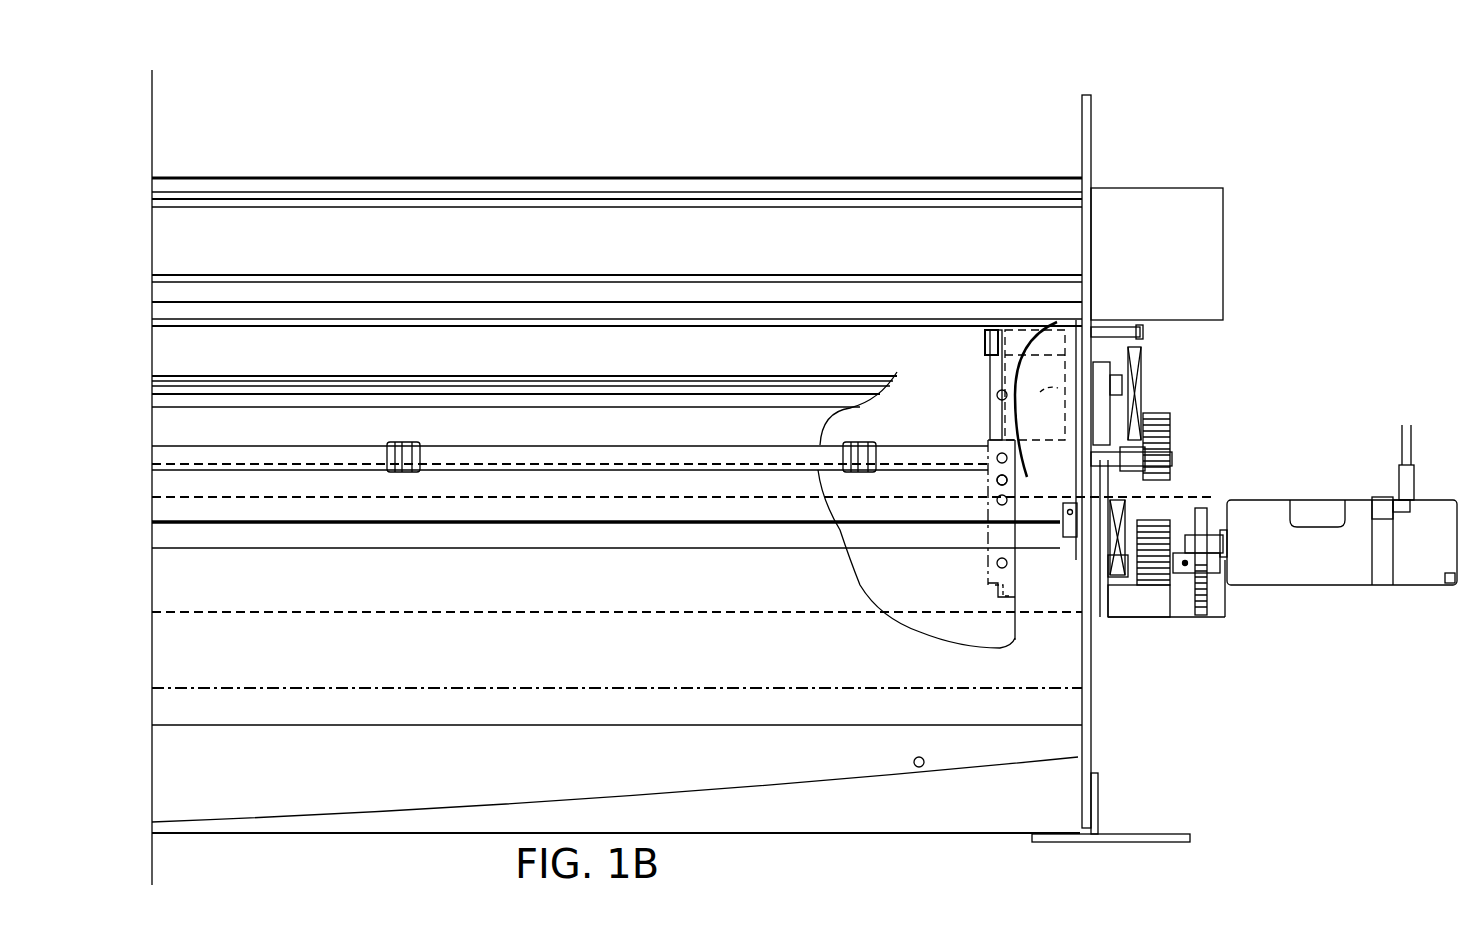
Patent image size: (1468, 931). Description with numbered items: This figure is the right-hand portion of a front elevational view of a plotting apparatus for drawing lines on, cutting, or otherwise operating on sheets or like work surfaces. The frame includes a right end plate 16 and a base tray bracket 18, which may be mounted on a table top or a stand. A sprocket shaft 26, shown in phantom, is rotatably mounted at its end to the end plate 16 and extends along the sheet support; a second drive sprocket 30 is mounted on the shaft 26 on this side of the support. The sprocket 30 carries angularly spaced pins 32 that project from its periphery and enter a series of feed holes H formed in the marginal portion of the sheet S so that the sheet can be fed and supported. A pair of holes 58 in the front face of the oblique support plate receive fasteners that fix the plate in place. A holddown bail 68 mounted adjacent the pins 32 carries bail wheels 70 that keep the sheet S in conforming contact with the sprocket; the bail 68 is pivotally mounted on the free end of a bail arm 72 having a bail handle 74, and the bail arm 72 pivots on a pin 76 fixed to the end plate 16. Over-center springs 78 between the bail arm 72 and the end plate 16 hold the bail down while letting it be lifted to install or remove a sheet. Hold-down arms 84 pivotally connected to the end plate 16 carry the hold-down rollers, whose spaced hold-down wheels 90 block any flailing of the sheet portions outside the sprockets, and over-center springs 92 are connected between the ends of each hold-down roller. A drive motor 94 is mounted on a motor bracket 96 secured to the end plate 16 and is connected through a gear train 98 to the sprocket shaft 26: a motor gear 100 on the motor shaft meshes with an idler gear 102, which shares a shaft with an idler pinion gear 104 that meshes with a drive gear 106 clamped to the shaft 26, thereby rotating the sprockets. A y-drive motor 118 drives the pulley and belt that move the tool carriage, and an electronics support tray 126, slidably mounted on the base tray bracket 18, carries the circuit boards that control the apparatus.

The right end plate 16 is at (1093, 148).
The base tray bracket 18 is at (1157, 833).
The sprocket shaft 26 is at (1172, 470).
The second drive sprocket 30 is at (988, 560).
The pins 32 is at (1012, 598).
The holes 58 is at (924, 759).
The holddown bail 68 is at (985, 335).
The bail wheels 70 is at (990, 390).
The bail arm 72 is at (1035, 385).
The bail handle 74 is at (1040, 328).
The pin 76 is at (1066, 530).
The over-center springs 78 is at (1108, 553).
The hold-down arms 84 is at (1118, 365).
The hold-down wheels 90 is at (402, 452).
The over-center springs 92 is at (1135, 395).
The drive motor 94 is at (1260, 500).
The motor bracket 96 is at (1137, 612).
The gear train 98 is at (1220, 584).
The motor gear 100 is at (1200, 515).
The idler gear 102 is at (1207, 584).
The idler pinion gear 104 is at (1150, 592).
The drive gear 106 is at (1158, 418).
The y-drive motor 118 is at (1125, 188).
The electronics support tray 126 is at (990, 805).
The sheet S is at (887, 553).
The feed holes H is at (1003, 486).